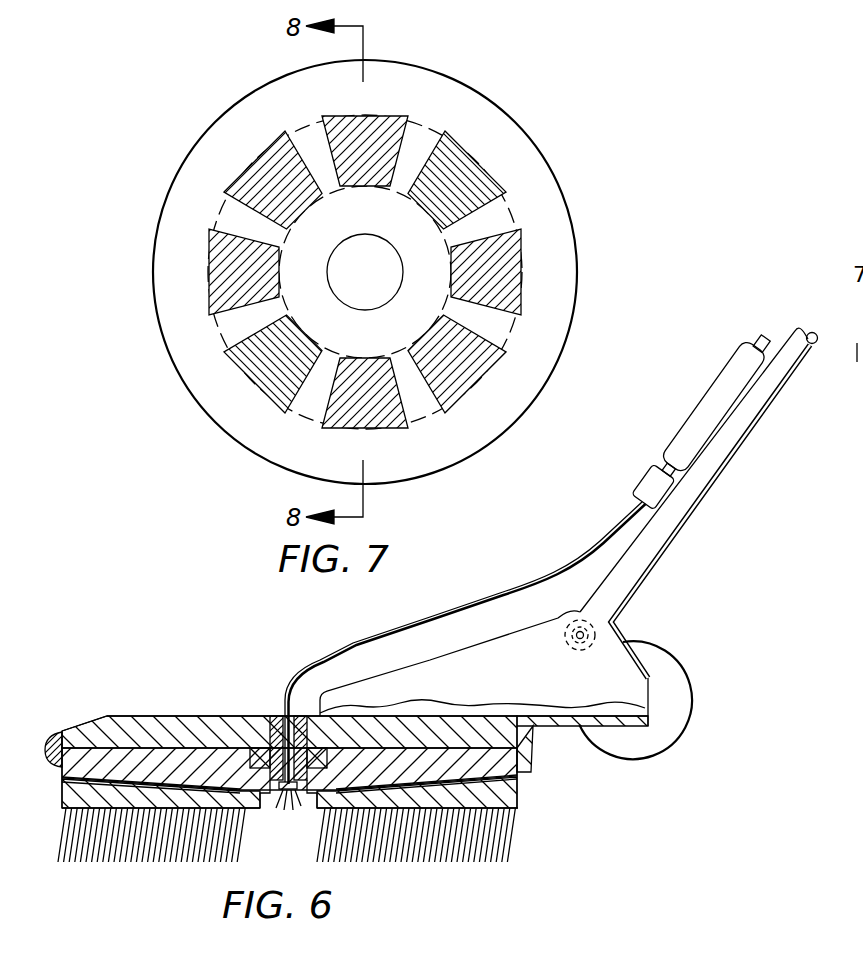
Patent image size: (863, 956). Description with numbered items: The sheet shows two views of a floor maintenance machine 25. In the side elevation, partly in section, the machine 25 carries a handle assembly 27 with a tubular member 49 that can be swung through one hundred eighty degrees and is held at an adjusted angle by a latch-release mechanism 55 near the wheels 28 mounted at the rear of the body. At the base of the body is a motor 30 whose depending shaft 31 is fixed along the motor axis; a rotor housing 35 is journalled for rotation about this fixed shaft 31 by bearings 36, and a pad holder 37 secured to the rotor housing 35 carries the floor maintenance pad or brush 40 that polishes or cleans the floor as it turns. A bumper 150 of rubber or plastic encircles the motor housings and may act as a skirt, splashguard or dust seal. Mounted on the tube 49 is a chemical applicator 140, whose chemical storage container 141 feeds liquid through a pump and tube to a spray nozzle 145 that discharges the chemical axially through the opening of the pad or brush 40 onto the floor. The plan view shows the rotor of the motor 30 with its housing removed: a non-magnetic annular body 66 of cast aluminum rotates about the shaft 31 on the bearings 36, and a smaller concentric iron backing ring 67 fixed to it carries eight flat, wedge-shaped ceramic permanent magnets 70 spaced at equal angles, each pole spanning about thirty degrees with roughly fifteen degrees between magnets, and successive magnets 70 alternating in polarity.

In FIG. 6, the machine 25 is at (252, 678).
In FIG. 6, the handle assembly 27 is at (664, 563).
In FIG. 6, the wheels 28 is at (675, 660).
In FIG. 6, the motor 30 is at (129, 708).
In FIG. 6, the shaft 31 is at (275, 716).
In FIG. 6, the rotor housing 35 is at (505, 766).
In FIG. 6, the bearings 36 is at (248, 752).
In FIG. 6, the pad holder 37 is at (513, 778).
In FIG. 6, the floor maintenance pad or brush 40 is at (513, 833).
In FIG. 6, the tubular member 49 is at (724, 456).
In FIG. 6, the latch-release mechanism 55 is at (592, 633).
In FIG. 7, the annular body 66 is at (577, 301).
In FIG. 7, the iron backing ring 67 is at (433, 433).
In FIG. 7, the permanent magnets 70 is at (385, 116).
In FIG. 6, the chemical applicator 140 is at (482, 628).
In FIG. 6, the chemical storage container 141 is at (707, 400).
In FIG. 6, the spray nozzle 145 is at (638, 486).
In FIG. 6, the bumper 150 is at (52, 730).